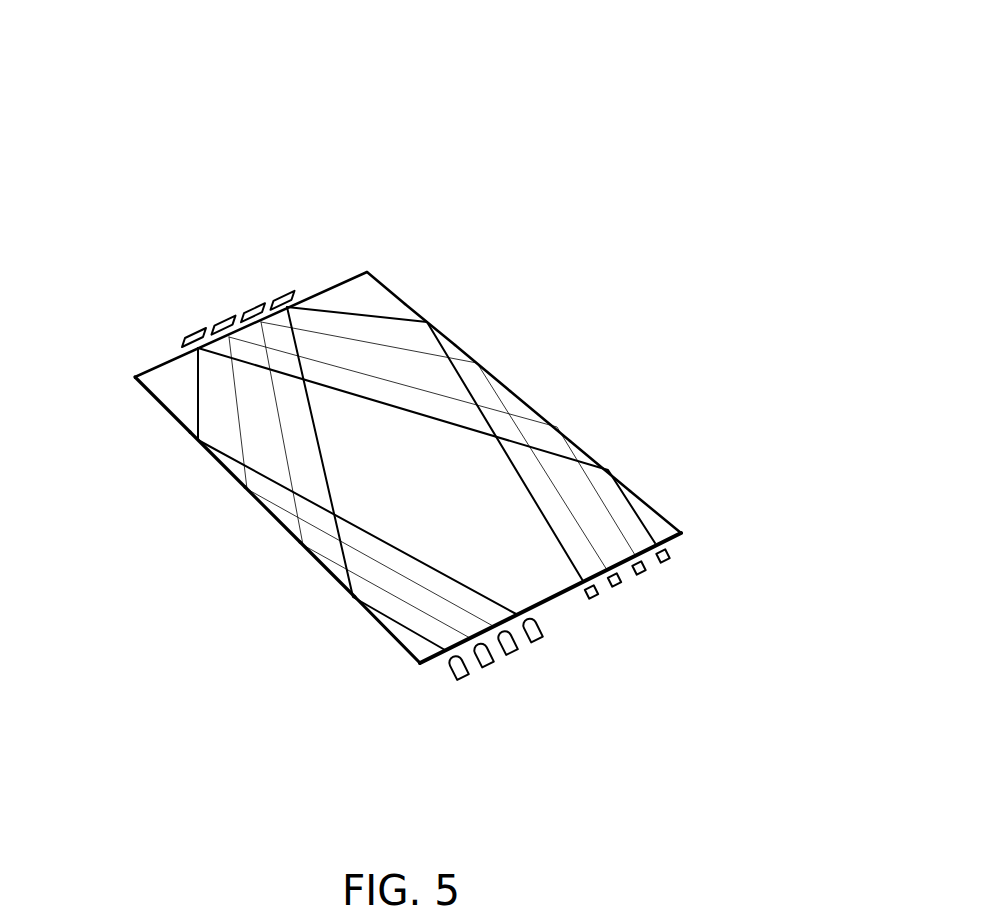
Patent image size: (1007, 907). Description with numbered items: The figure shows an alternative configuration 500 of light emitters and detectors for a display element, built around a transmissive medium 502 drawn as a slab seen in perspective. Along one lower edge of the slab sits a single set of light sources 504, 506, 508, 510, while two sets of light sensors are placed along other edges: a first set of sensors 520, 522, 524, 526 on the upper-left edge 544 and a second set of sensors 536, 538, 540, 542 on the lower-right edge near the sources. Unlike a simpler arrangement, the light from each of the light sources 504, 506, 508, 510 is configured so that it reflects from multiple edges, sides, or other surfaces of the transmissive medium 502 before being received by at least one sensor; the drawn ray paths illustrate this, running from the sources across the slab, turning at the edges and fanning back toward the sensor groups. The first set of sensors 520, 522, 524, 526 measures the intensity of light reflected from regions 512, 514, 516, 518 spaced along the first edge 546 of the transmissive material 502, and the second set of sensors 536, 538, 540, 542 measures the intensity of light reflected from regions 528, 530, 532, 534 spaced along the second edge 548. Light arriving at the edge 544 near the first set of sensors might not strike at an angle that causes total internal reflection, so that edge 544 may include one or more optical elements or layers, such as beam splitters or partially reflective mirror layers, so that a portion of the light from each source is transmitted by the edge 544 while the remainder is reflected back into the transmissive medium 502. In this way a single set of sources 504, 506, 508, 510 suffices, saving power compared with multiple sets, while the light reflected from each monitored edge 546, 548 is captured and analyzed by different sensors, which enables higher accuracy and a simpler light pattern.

The alternative configuration 500 is at (409, 389).
The transmissive medium 502 is at (403, 449).
The light source 504 is at (465, 679).
The light source 506 is at (489, 666).
The light source 508 is at (513, 646).
The light source 510 is at (540, 634).
The region 512 is at (368, 627).
The region 514 is at (315, 573).
The region 516 is at (262, 520).
The region 518 is at (205, 467).
The light sensor 520 is at (185, 335).
The light sensor 522 is at (223, 317).
The light sensor 524 is at (250, 300).
The light sensor 526 is at (286, 294).
The region 528 is at (592, 445).
The region 530 is at (535, 400).
The region 532 is at (470, 345).
The region 534 is at (410, 292).
The light sensor 536 is at (600, 598).
The light sensor 538 is at (622, 583).
The light sensor 540 is at (648, 570).
The light sensor 542 is at (672, 548).
The edge 544 is at (147, 368).
The first edge 546 is at (147, 393).
The second edge 548 is at (380, 278).